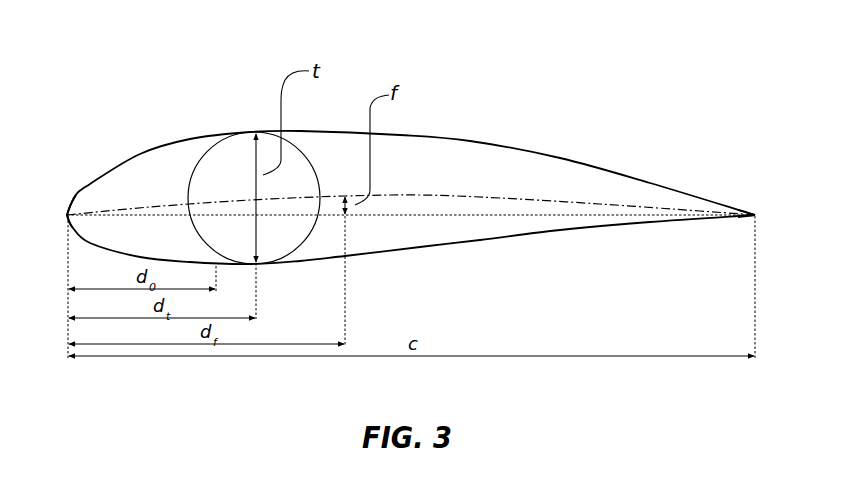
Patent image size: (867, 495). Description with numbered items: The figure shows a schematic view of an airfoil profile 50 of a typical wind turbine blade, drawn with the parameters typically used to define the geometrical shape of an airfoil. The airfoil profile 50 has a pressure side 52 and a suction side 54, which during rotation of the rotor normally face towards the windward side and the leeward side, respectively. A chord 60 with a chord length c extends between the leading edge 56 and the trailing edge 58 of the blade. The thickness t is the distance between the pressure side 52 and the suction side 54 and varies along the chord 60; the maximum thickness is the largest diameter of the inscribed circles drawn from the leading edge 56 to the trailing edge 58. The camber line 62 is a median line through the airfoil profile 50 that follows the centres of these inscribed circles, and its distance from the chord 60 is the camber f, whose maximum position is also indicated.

The airfoil profile 50 is at (411, 154).
The pressure side 52 is at (545, 239).
The suction side 54 is at (497, 145).
The leading edge 56 is at (67, 215).
The trailing edge 58 is at (755, 208).
The chord 60 is at (579, 215).
The camber line 62 is at (398, 192).